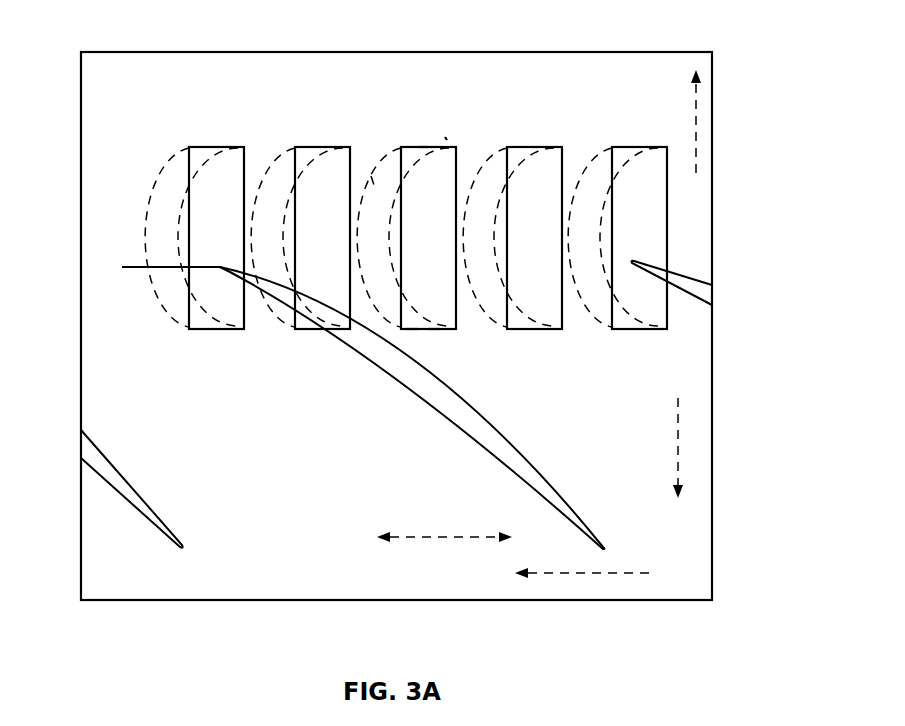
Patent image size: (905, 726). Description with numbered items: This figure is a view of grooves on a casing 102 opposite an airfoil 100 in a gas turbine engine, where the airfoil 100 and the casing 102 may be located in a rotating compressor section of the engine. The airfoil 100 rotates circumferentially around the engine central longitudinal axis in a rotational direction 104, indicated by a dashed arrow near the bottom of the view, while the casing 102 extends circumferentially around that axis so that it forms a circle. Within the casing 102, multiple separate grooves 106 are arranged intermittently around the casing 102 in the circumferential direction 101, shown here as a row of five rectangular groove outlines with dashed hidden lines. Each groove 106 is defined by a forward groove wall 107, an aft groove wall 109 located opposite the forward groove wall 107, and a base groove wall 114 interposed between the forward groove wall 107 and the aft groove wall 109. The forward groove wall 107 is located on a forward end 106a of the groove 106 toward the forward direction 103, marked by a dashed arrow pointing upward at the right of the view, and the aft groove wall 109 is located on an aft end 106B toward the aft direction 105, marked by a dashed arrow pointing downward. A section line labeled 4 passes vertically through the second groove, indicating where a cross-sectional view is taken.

The airfoil 100 is at (448, 393).
The circumferential direction 101 is at (443, 538).
The casing 102 is at (152, 100).
The forward direction 103 is at (697, 110).
The rotational direction 104 is at (600, 574).
The aft direction 105 is at (678, 440).
The groove 106 is at (417, 162).
The forward end 106a is at (447, 135).
The aft end 106B is at (412, 342).
The forward groove wall 107 is at (422, 147).
The aft groove wall 109 is at (434, 330).
The base groove wall 114 is at (373, 182).
The section line for FIG. 4 is at (327, 98).